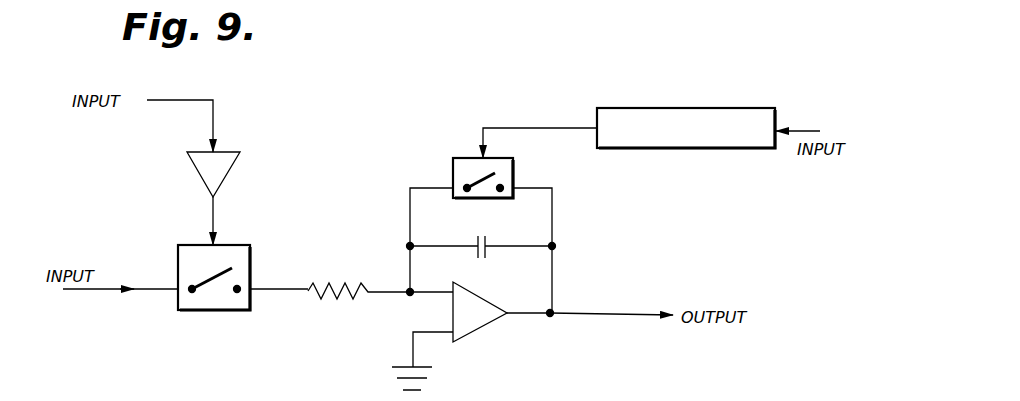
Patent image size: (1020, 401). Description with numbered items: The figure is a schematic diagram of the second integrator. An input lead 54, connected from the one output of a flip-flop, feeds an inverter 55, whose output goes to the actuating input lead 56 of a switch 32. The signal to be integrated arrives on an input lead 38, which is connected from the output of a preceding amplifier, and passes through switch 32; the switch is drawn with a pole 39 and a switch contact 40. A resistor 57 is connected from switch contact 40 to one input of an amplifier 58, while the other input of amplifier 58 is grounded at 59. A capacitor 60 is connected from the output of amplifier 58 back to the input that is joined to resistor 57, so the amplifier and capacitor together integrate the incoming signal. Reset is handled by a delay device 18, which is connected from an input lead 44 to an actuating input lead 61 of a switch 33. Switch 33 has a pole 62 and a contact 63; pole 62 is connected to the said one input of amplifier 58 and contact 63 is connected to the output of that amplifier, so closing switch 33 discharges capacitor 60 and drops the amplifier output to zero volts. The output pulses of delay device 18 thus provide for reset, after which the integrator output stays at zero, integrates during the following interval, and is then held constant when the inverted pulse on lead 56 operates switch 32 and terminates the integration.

The delay device 18 is at (683, 149).
The switch 32 is at (220, 312).
The switch 33 is at (514, 163).
The input lead 38 is at (140, 292).
The switch contact 39 is at (212, 274).
The switch contact 40 is at (240, 287).
The input lead 44 is at (820, 130).
The input lead 54 is at (213, 119).
The inverter 55 is at (225, 178).
The actuating input lead 56 is at (213, 222).
The resistor 57 is at (338, 283).
The amplifier 58 is at (487, 323).
The ground 59 is at (428, 333).
The capacitor 60 is at (480, 259).
The actuating input lead 61 is at (550, 104).
The pole 62 is at (468, 185).
The contact 63 is at (500, 191).